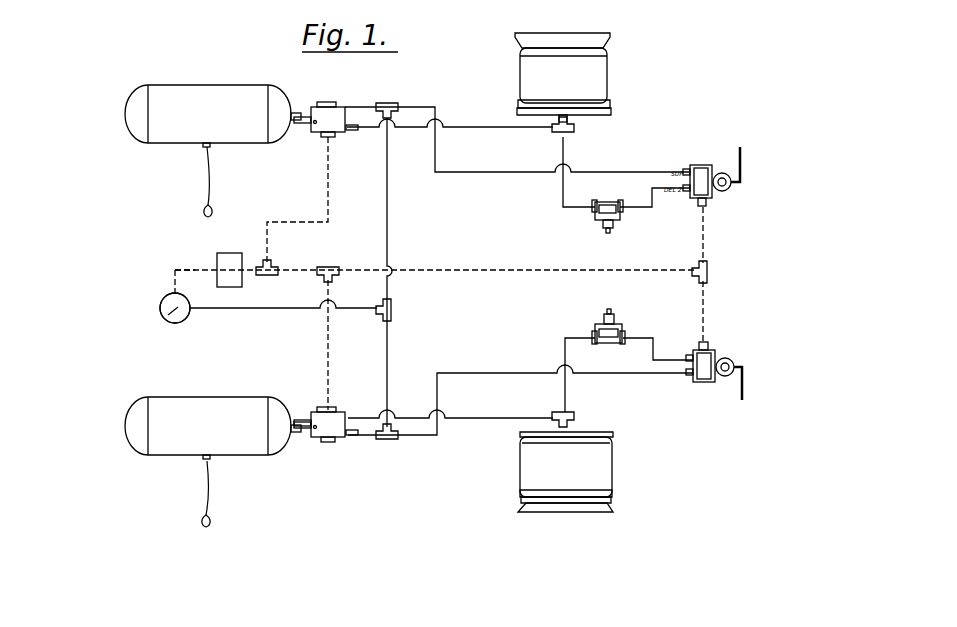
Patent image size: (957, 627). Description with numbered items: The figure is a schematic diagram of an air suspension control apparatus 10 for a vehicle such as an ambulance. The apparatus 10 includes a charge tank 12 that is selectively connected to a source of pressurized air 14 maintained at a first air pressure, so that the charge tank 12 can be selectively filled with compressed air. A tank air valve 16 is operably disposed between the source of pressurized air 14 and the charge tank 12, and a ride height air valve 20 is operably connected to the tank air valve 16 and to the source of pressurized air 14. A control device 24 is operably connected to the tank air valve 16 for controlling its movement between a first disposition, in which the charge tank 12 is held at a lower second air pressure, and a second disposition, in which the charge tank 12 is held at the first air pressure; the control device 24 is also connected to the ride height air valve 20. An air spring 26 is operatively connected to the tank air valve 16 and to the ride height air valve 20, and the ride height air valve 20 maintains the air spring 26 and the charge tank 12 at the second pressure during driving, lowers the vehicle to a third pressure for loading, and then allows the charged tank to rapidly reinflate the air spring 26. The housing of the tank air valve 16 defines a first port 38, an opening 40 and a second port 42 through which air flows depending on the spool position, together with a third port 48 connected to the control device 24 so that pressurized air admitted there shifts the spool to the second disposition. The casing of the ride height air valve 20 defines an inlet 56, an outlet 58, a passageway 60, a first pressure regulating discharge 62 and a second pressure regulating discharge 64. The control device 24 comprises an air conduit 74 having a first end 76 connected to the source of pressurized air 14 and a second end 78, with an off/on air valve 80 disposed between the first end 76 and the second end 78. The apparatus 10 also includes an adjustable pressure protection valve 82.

The air suspension control apparatus 10 is at (438, 482).
The charge tank 12 is at (173, 445).
The source of pressurized air 14 is at (170, 318).
The tank air valve 16 is at (300, 500).
The ride height air valve 20 is at (788, 433).
The control device 24 is at (113, 226).
The air spring 26 is at (563, 480).
The first port 38 is at (347, 412).
The opening 40 is at (312, 432).
The second port 42 is at (350, 442).
The third port 48 is at (328, 410).
The inlet 56 is at (690, 382).
The outlet 58 is at (689, 353).
The passageway 60 is at (710, 350).
The first pressure regulating discharge 62 is at (718, 363).
The second pressure regulating discharge 64 is at (725, 383).
The air conduit 74 is at (193, 270).
The first end 76 is at (163, 295).
The second end 78 is at (193, 270).
The off/on air valve 80 is at (218, 253).
The adjustable pressure protection valve 82 is at (608, 344).